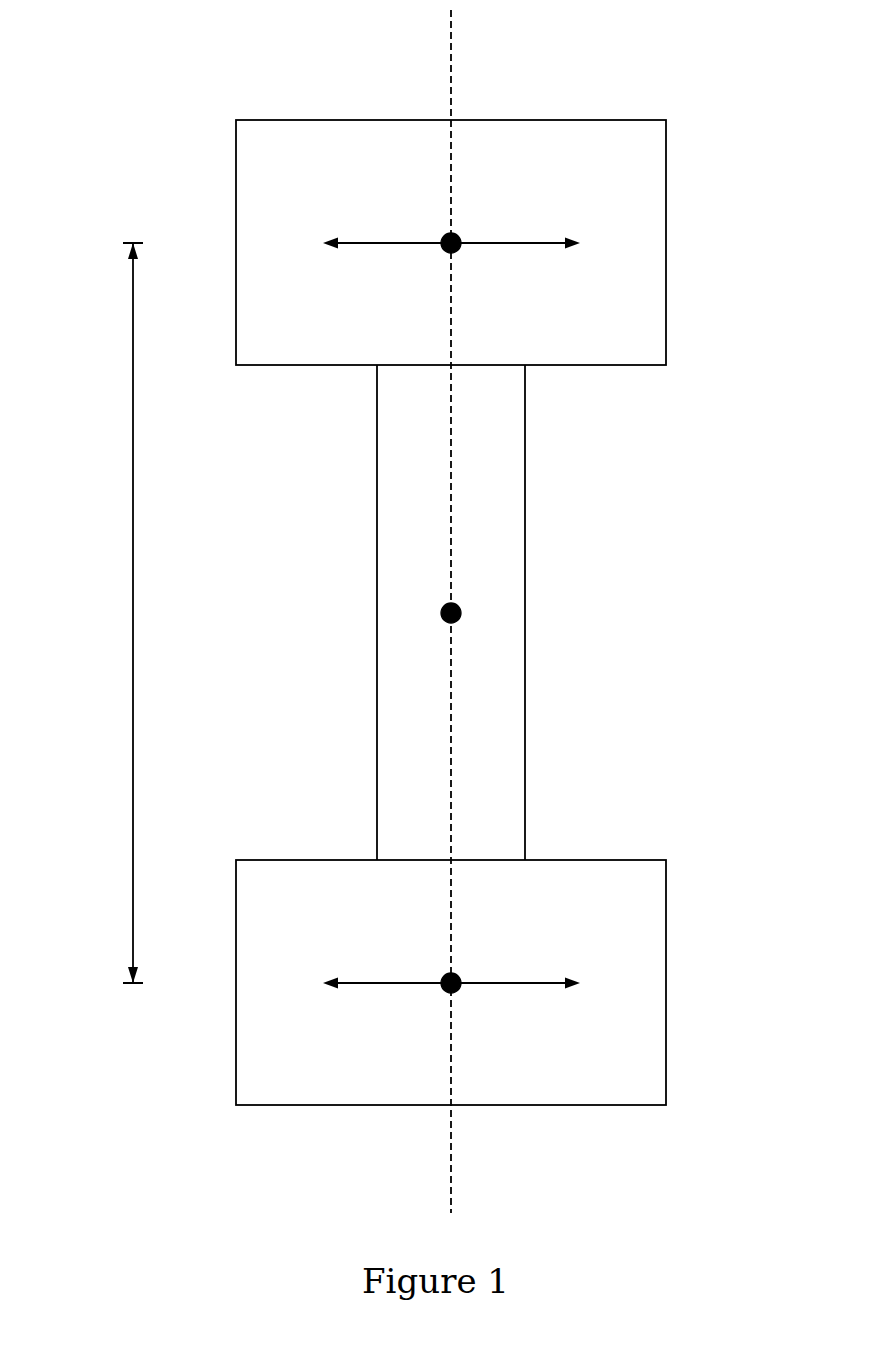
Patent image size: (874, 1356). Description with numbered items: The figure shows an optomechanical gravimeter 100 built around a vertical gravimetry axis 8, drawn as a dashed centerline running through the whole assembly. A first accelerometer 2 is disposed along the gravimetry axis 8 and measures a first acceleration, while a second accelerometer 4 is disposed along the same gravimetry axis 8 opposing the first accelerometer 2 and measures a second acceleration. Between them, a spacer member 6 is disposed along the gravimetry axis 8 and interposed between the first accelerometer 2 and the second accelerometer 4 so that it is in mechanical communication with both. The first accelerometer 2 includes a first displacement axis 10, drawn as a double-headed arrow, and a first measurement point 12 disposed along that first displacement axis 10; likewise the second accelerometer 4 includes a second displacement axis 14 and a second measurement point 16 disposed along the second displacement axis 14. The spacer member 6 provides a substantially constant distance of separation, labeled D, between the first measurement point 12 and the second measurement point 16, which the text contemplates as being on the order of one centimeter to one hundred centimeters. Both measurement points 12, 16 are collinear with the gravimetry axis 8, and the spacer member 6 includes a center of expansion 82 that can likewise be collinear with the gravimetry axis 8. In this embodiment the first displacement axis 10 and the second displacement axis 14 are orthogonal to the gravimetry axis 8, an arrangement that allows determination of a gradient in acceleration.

The optomechanical gravimeter 100 is at (68, 32).
The gravimetry axis 8 is at (452, 53).
The first accelerometer 2 is at (642, 243).
The second accelerometer 4 is at (642, 983).
The spacer member 6 is at (507, 613).
The first measurement point 12 is at (459, 236).
The first displacement axis 10 is at (493, 245).
The second measurement point 16 is at (459, 976).
The second displacement axis 14 is at (493, 985).
The center of expansion 82 is at (441, 611).